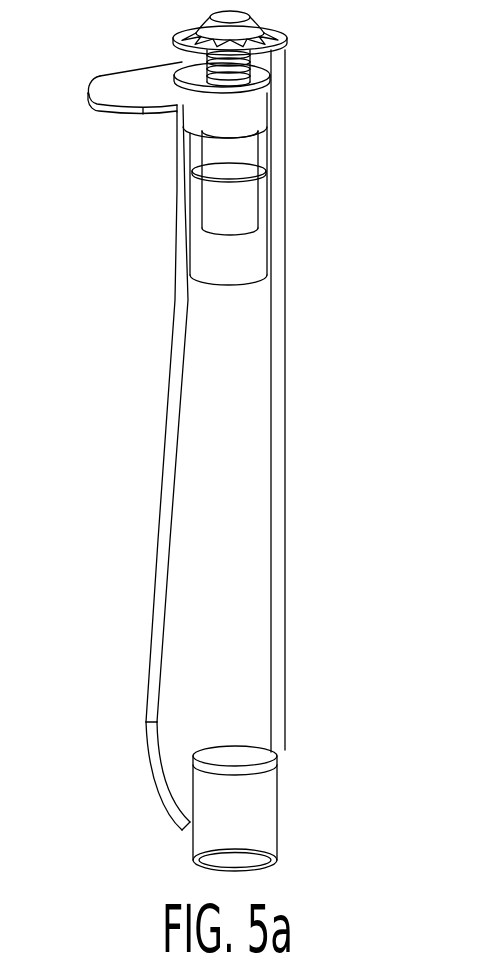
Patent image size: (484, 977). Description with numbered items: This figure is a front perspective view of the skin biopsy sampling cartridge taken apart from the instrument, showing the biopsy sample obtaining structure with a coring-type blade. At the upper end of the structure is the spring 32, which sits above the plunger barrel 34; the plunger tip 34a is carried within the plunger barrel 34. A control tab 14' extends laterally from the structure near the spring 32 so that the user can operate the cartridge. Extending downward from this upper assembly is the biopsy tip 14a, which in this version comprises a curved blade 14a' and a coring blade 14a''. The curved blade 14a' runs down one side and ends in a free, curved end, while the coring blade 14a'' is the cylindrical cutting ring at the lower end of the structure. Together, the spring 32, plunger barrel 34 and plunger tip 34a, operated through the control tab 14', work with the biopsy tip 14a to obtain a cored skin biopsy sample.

The control tab 14' is at (99, 64).
The spring 32 is at (280, 73).
The plunger barrel 34 is at (258, 262).
The plunger tip 34a is at (222, 208).
The biopsy tip 14a is at (268, 417).
The curved blade 14a' is at (117, 776).
The coring blade 14a'' is at (300, 808).